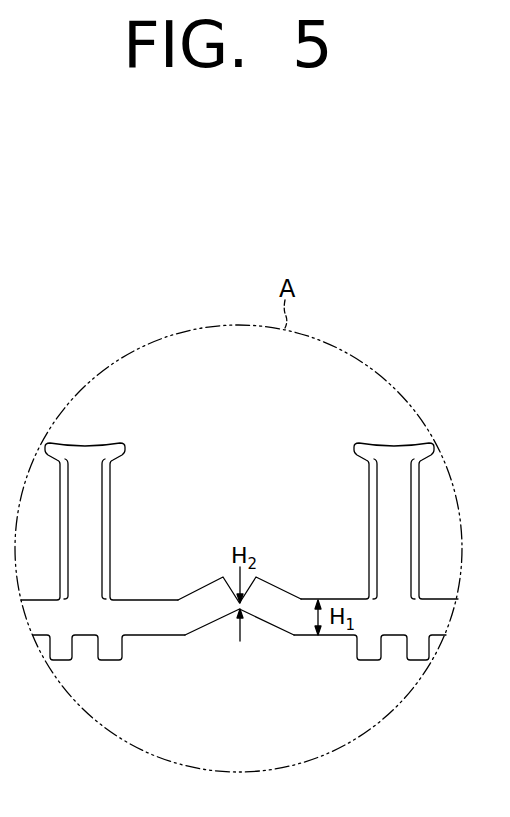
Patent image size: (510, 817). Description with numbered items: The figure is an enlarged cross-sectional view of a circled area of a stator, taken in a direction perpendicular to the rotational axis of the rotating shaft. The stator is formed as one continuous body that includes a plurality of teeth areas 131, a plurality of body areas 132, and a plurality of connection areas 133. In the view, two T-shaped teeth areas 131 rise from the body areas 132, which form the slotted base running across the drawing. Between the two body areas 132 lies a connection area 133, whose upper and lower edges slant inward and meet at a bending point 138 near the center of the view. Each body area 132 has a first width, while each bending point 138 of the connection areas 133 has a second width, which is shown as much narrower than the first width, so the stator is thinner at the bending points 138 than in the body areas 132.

The teeth areas 131 is at (88, 502).
The body areas 132 is at (157, 628).
The connection areas 133 is at (222, 590).
The bending points 138 is at (237, 611).